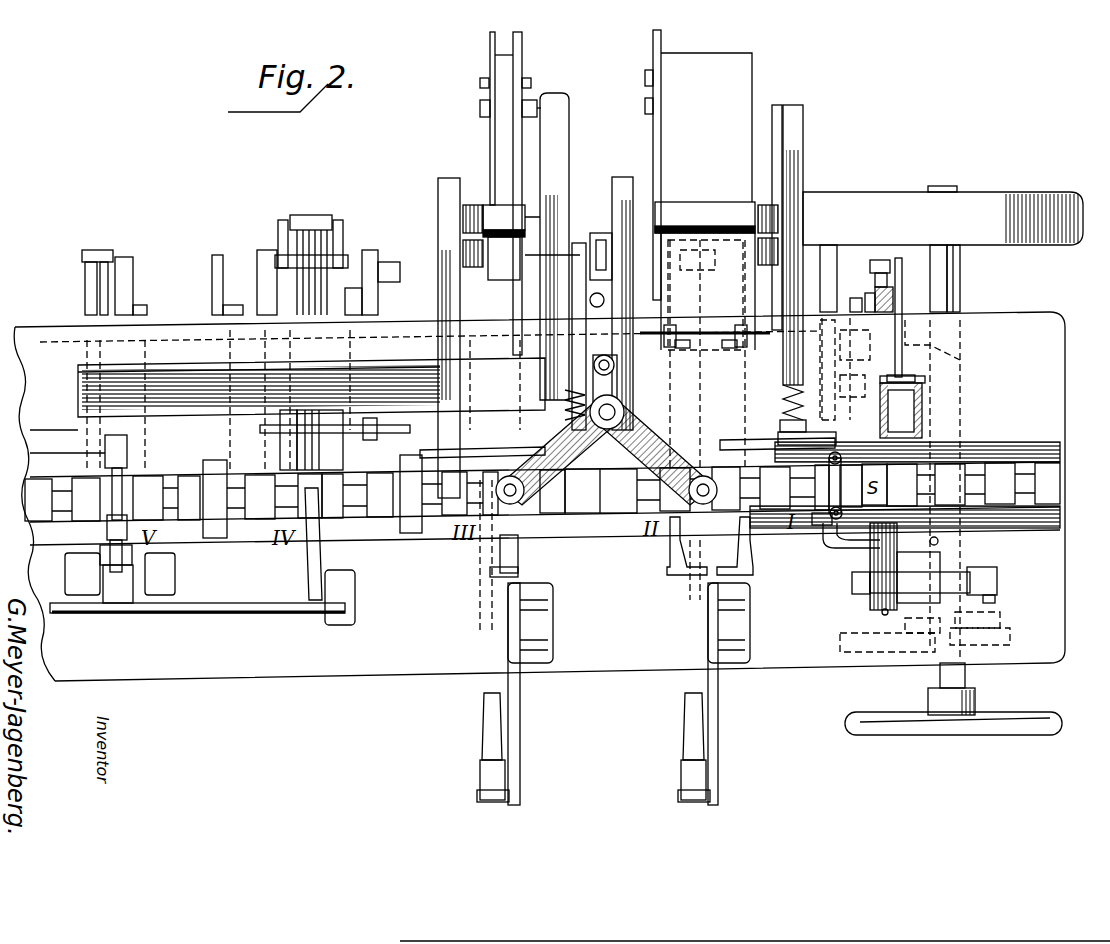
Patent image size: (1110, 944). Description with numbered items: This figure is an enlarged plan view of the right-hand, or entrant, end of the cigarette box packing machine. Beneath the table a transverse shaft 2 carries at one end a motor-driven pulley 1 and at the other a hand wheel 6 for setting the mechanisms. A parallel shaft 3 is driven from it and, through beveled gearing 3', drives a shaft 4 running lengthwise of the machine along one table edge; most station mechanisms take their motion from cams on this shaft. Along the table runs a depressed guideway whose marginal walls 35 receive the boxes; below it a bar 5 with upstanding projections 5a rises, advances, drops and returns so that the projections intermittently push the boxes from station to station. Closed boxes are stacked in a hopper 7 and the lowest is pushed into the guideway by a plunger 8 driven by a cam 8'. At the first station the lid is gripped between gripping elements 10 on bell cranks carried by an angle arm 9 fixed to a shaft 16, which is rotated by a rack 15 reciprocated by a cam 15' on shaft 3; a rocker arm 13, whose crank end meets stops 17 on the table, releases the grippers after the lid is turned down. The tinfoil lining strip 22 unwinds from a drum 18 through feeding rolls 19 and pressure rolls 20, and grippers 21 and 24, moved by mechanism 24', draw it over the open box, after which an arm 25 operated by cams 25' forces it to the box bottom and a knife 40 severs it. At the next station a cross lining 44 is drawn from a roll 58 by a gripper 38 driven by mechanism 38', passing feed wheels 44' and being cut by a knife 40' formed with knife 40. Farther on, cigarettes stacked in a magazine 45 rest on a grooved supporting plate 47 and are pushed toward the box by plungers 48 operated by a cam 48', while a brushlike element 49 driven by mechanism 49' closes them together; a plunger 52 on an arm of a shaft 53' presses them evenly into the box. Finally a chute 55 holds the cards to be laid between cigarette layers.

The pulley 1 is at (980, 205).
The transverse shaft 2 is at (958, 268).
The shaft 3 is at (923, 459).
The beveled gearing 3' is at (850, 370).
The shaft 4 is at (16, 325).
The bar 5 is at (1050, 478).
The upstanding projections 5a is at (1030, 493).
The hand wheel 6 is at (846, 723).
The hopper 7 is at (922, 410).
The plunger 8 is at (892, 378).
The cam 8' is at (874, 286).
The angle arm 9 is at (835, 525).
The gripping elements 10 is at (823, 432).
The rocker arm 13 is at (820, 540).
The rack 15 is at (901, 568).
The cam 15' is at (944, 625).
The shaft 16 is at (882, 612).
The stops 17 is at (840, 547).
The drum 18 is at (744, 70).
The feeding rolls 19 is at (700, 208).
The pressure rolls 20 is at (676, 375).
The gripper 21 is at (748, 540).
The lining strip 22 is at (706, 127).
The gripper 24 is at (671, 546).
The gripper operating mechanism 24' is at (726, 694).
The arm 25 is at (606, 430).
The cams 25' is at (602, 303).
The marginal walls 35 is at (591, 532).
The gripper 38 is at (521, 556).
The gripper mechanism 38' is at (524, 694).
The knife 40 is at (767, 450).
The knife 40' is at (482, 457).
The cross lining 44 is at (503, 295).
The feed wheels 44' is at (521, 223).
The magazine 45 is at (428, 398).
The supporting plate 47 is at (288, 449).
The plungers 48 is at (317, 265).
The cam 48' is at (391, 278).
The brushlike element 49 is at (335, 441).
The brush operating mechanism 49' is at (203, 285).
The plunger 52 is at (315, 495).
The shaft 53' is at (202, 605).
The chute 55 is at (120, 450).
The roll 58 is at (505, 67).